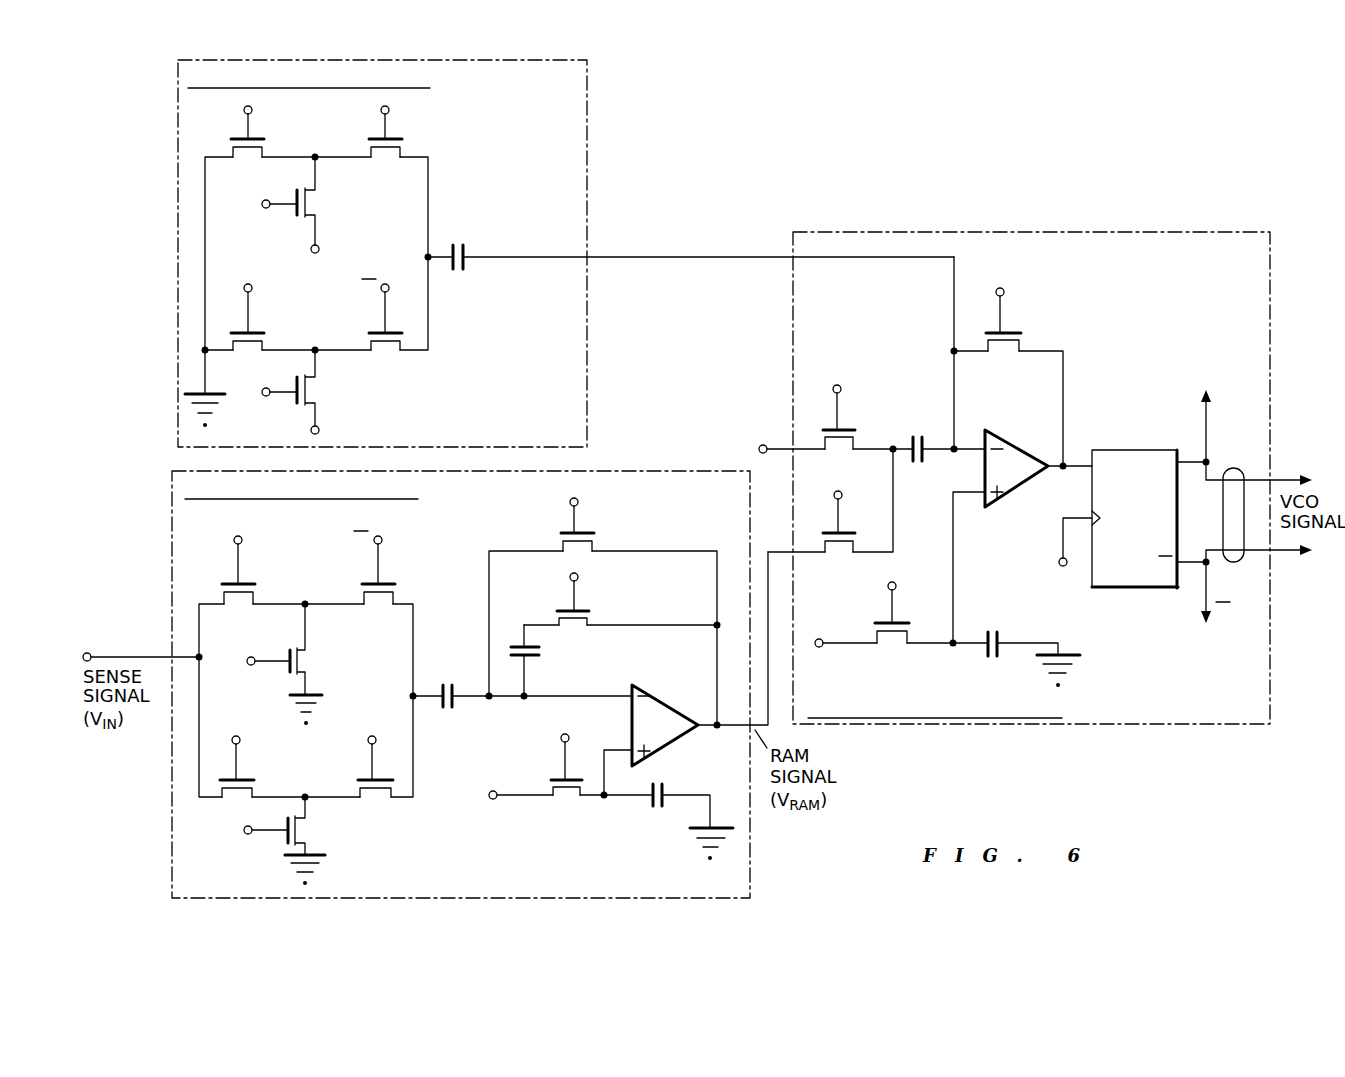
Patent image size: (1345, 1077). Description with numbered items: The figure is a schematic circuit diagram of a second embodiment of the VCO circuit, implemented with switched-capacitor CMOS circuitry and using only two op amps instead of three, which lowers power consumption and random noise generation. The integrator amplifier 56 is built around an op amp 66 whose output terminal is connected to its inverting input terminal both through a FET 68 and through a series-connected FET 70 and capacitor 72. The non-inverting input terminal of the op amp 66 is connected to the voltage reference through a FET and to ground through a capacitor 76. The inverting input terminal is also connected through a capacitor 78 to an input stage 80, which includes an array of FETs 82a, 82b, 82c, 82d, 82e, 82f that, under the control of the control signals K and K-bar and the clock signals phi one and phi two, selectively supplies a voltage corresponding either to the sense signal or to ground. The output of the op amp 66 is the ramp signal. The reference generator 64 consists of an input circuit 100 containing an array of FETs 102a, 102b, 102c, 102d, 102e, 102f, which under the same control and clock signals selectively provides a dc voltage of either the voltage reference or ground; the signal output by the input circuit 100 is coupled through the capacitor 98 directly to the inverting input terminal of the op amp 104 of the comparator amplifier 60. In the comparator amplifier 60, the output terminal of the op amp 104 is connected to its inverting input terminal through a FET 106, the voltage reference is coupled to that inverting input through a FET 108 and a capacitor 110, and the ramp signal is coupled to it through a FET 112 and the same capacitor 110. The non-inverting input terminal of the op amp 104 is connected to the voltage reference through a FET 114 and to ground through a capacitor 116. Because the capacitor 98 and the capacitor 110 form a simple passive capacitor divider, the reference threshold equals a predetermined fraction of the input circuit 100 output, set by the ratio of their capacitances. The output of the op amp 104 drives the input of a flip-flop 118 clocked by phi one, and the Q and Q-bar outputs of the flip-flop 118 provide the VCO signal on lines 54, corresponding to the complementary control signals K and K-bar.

The reference generator 64 is at (178, 122).
The input circuit 100 is at (420, 154).
The FET 102a is at (262, 160).
The FET 102b is at (308, 198).
The FET 102c is at (400, 160).
The FET 102d is at (262, 353).
The FET 102e is at (308, 386).
The FET 102f is at (400, 353).
The capacitor 98 is at (463, 251).
The integrator amplifier 56 is at (172, 532).
The input stage 80 is at (415, 580).
The FET 82a is at (253, 607).
The FET 82b is at (300, 654).
The FET 82c is at (393, 607).
The FET 82d is at (250, 800).
The FET 82e is at (305, 840).
The FET 82f is at (391, 800).
The capacitor 78 is at (443, 697).
The FET 68 is at (592, 556).
The FET 70 is at (587, 630).
The capacitor 72 is at (538, 658).
The op amp 66 is at (683, 710).
The capacitor 76 is at (665, 790).
The comparator amplifier 60 is at (1262, 218).
The FET 106 is at (1004, 355).
The FET 108 is at (853, 452).
The capacitor 110 is at (913, 438).
The FET 112 is at (853, 556).
The op amp 104 is at (1016, 447).
The FET 114 is at (905, 646).
The capacitor 116 is at (995, 634).
The flip-flop 118 is at (1130, 450).
The lines 54 is at (1243, 470).